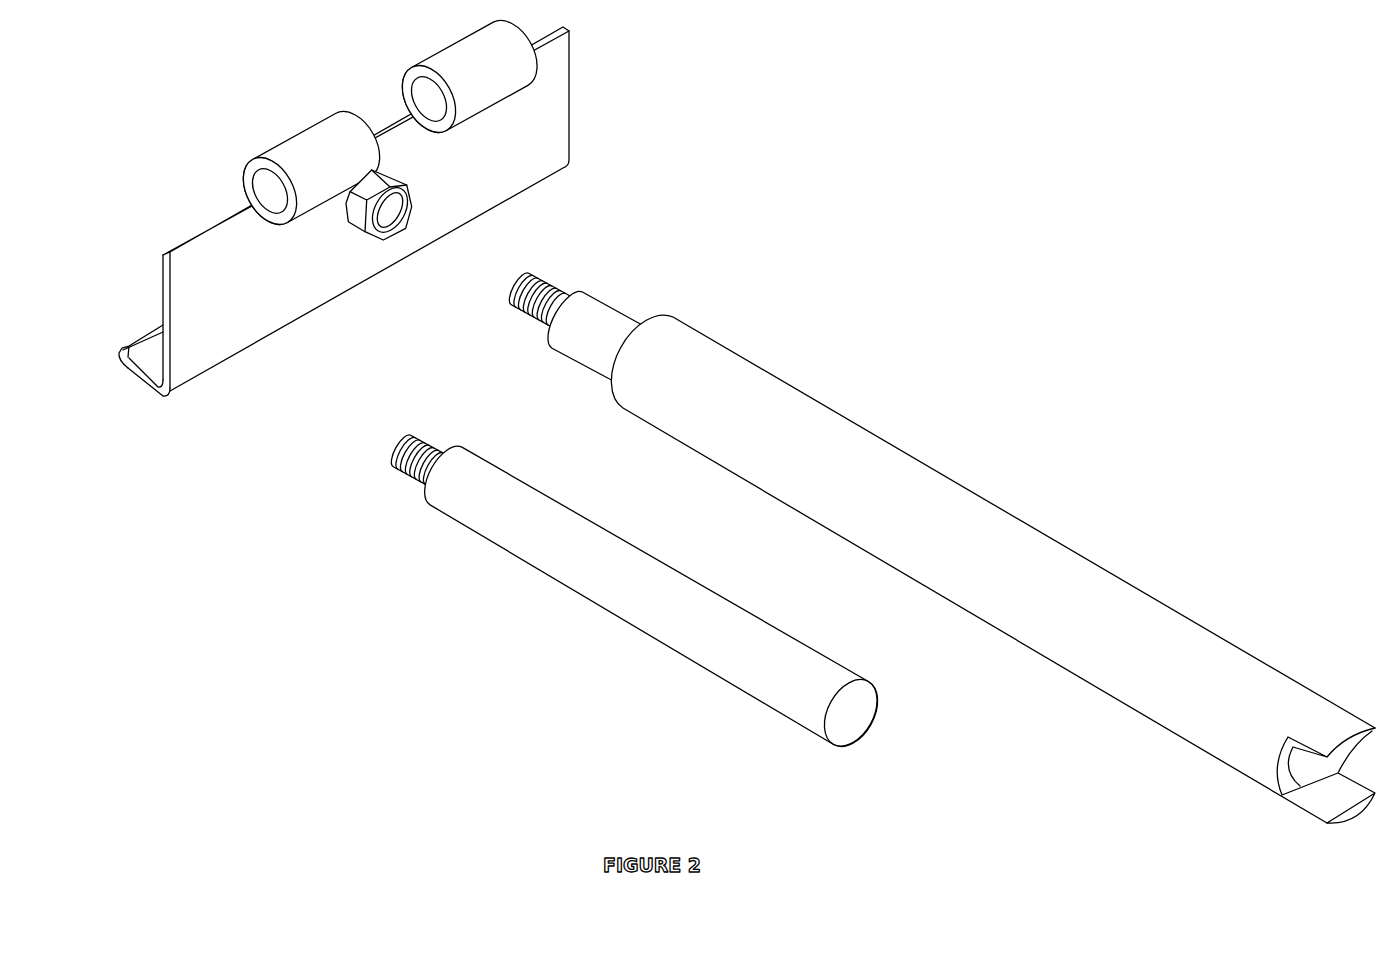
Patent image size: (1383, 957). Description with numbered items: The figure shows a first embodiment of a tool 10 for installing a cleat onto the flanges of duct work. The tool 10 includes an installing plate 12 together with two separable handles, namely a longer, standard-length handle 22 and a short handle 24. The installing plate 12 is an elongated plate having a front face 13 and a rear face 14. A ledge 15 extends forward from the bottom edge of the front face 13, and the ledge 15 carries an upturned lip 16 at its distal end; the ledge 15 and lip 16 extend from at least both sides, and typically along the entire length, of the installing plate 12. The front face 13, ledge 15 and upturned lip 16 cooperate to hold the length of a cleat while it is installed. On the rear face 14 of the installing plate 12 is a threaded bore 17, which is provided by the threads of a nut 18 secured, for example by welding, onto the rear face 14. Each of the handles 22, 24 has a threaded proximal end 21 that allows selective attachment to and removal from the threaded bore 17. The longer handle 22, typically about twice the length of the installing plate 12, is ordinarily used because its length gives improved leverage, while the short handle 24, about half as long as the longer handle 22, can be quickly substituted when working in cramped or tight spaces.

The tool 10 is at (672, 131).
The installing plate 12 is at (159, 302).
The front face 13 is at (188, 240).
The rear face 14 is at (226, 267).
The ledge 15 is at (155, 377).
The upturned lip 16 is at (137, 344).
The threaded bore 17 is at (386, 208).
The nut 18 is at (390, 170).
The threaded proximal end 21 is at (553, 280).
The longer, standard-length handle 22 is at (928, 502).
The short handle 24 is at (680, 628).